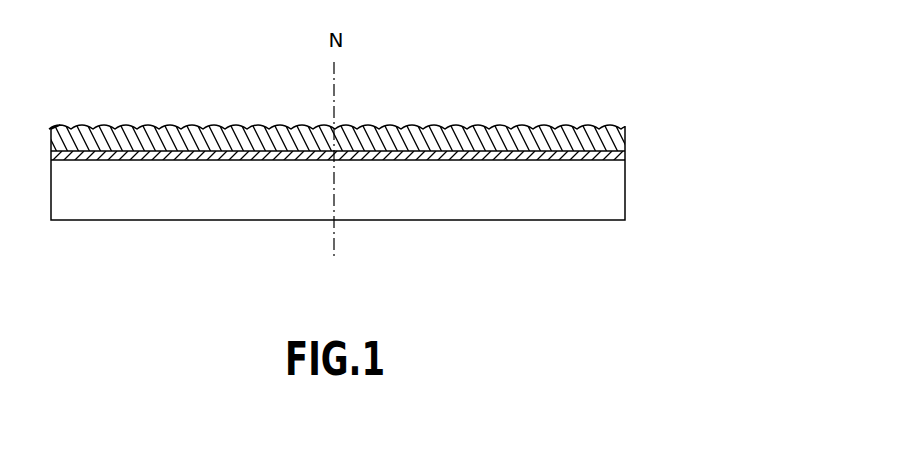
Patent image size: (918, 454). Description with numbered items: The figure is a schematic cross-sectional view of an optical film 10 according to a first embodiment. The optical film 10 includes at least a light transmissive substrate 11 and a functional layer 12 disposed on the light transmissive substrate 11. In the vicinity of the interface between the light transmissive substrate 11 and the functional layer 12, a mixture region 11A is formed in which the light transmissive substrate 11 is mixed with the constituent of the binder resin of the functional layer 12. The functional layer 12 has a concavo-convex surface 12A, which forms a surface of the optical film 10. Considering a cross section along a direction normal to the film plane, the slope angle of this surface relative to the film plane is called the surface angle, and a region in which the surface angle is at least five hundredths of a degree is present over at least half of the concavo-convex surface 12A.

The optical film 10 is at (455, 91).
The light transmissive substrate 11 is at (612, 188).
The mixture region 11A is at (628, 155).
The functional layer 12 is at (626, 128).
The concavo-convex surface 12A is at (530, 127).